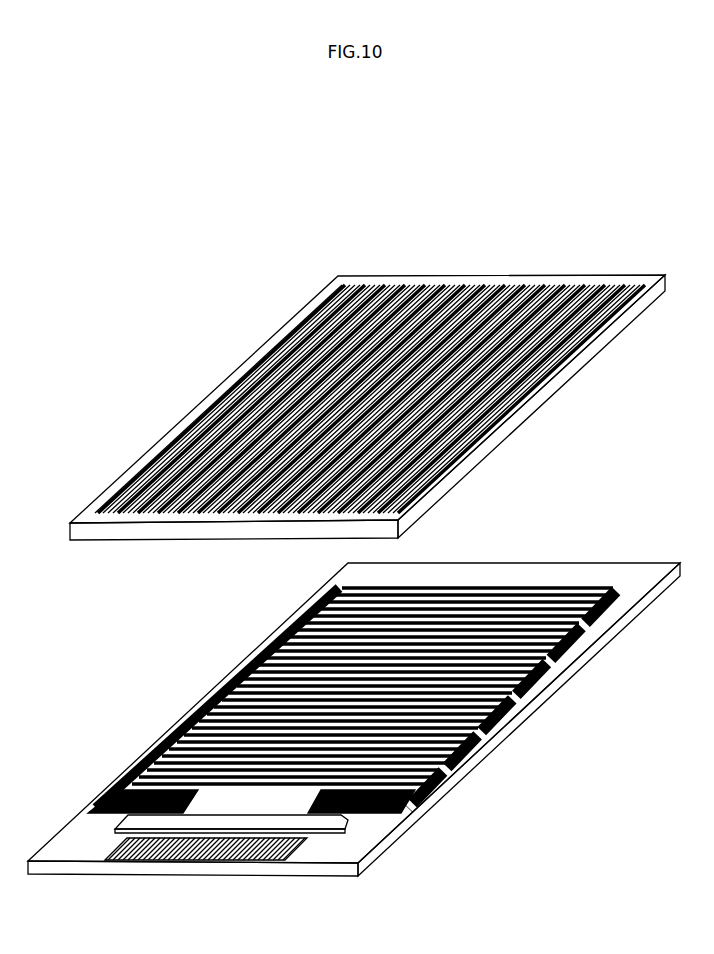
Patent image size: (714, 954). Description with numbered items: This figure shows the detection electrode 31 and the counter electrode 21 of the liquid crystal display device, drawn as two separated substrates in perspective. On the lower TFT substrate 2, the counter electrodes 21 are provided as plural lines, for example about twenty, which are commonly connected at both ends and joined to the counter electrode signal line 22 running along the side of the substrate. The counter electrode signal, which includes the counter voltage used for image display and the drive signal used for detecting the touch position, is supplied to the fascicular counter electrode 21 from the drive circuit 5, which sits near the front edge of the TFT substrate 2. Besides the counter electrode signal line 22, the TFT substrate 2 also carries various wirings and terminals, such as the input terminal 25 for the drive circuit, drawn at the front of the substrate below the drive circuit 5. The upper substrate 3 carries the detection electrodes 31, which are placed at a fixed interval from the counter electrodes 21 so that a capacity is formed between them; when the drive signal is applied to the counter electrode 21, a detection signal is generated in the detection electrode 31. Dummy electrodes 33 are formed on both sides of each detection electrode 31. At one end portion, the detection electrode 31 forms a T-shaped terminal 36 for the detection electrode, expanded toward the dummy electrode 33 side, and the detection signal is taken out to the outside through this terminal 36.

The TFT substrate 2 is at (522, 553).
The front substrate 3 is at (430, 268).
The drive circuit 5 is at (373, 813).
The counter electrode 21 is at (575, 556).
The counter electrode signal line 22 is at (547, 677).
The input terminal for the drive circuit 25 is at (153, 852).
The detection electrode 31 is at (505, 273).
The dummy electrode 33 is at (552, 273).
The terminal for the detection electrode 36 is at (123, 507).